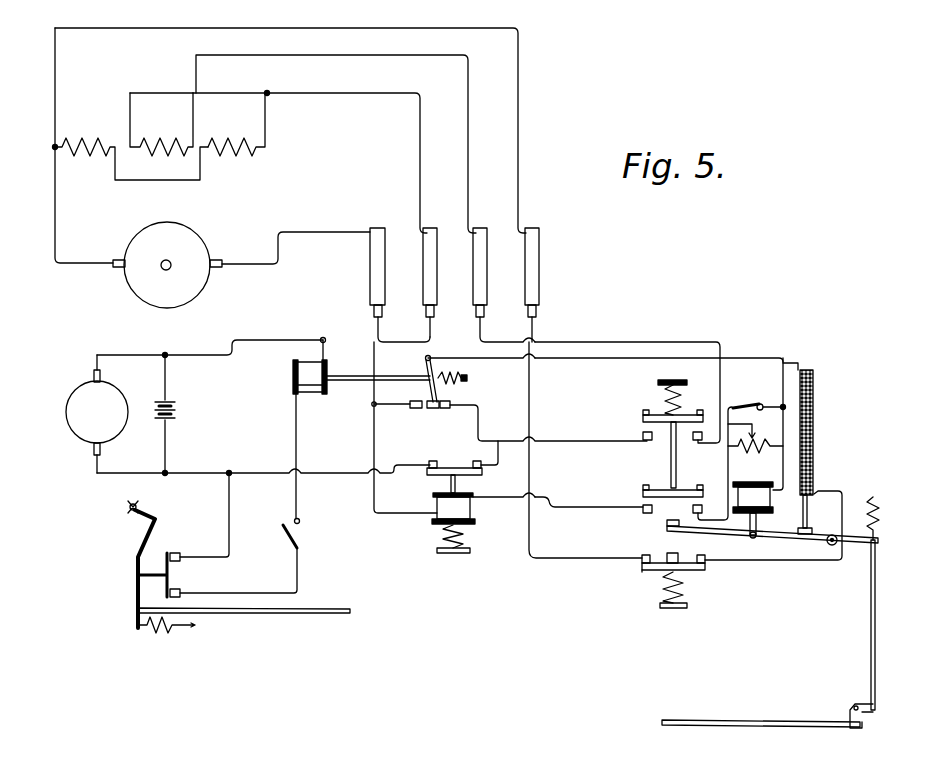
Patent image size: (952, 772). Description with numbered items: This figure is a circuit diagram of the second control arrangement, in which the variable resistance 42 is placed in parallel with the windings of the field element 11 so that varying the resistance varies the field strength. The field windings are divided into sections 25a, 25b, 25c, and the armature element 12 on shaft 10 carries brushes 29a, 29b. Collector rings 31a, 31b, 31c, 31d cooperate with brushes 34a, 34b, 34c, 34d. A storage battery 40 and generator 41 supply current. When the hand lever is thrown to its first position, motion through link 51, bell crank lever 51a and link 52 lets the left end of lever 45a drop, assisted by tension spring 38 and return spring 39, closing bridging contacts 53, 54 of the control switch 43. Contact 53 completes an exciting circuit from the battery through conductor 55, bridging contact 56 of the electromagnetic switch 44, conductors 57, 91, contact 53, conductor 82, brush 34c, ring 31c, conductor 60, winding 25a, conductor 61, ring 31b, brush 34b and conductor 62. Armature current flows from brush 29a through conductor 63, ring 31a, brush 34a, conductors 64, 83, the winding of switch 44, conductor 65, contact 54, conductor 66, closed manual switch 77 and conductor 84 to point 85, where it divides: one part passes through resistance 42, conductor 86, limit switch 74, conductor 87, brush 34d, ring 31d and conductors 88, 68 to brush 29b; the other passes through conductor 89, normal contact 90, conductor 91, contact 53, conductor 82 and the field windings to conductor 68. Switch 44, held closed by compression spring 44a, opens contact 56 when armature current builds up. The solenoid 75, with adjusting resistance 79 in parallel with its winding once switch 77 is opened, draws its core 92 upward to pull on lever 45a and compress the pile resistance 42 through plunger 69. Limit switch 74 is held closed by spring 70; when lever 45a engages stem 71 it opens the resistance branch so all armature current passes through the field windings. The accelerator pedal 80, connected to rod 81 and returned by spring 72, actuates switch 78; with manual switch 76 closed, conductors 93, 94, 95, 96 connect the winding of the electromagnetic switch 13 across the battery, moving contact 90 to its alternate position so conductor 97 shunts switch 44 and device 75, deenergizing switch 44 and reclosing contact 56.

The shaft 10 is at (170, 262).
The field element 11 is at (158, 78).
The armature element 12 is at (189, 229).
The relay coil 13 is at (307, 373).
The field winding section 25a is at (161, 124).
The field winding section 25b is at (131, 148).
The field winding section 25c is at (239, 124).
The right hand armature brush 29a is at (219, 270).
The left hand armature brush 29b is at (114, 268).
The collector ring 31a is at (375, 221).
The collector ring 31b is at (433, 221).
The collector ring 31c is at (484, 221).
The collector ring 31d is at (536, 221).
The brush 34a is at (370, 338).
The brush 34b is at (413, 321).
The brush 34c is at (476, 338).
The brush 34d is at (528, 328).
The coiled tension spring 38 is at (878, 515).
The return spring 39 is at (684, 393).
The storage battery 40 is at (177, 413).
The generator 41 is at (66, 420).
The variable resistance 42 is at (814, 425).
The operator's control switch 43 is at (649, 406).
The electromagnetic switch 44 is at (433, 505).
The compression spring 44a is at (442, 534).
The control lever 45a is at (705, 540).
The link 51 is at (690, 720).
The bell crank lever 51a is at (852, 700).
The link 52 is at (878, 594).
The bridging contact 53 is at (690, 415).
The bridging contact 54 is at (681, 489).
The conductor 55 is at (186, 473).
The bridging contact 56 is at (445, 467).
The conductor 57 is at (502, 463).
The conductor 60 is at (470, 152).
The conductor 61 is at (422, 160).
The conductor 62 is at (222, 352).
The conductor 63 is at (281, 250).
The conductor 64 is at (372, 375).
The conductor 65 is at (573, 507).
The conductor 66 is at (727, 461).
The conductor 68 is at (62, 204).
The plunger 69 is at (808, 512).
The compression spring 70 is at (690, 590).
The stem 71 is at (667, 553).
The return spring 72 is at (167, 643).
The limit switch 74 is at (648, 574).
The electromagnetic actuator 75 is at (770, 502).
The manual switch 76 is at (300, 536).
The manual switch 77 is at (756, 396).
The pedal actuated switch 78 is at (176, 576).
The adjusting resistance 79 is at (755, 452).
The accelerator pedal 80 is at (153, 523).
The rod 81 is at (236, 616).
The conductor 82 is at (600, 344).
The conductor 83 is at (375, 440).
The conductor 84 is at (783, 393).
The point 85 is at (795, 365).
The conductor 86 is at (763, 562).
The conductor 87 is at (532, 551).
The conductor 88 is at (519, 94).
The conductor 89 is at (561, 360).
The normal switch contact 90 is at (425, 359).
The conductor 91 is at (480, 413).
The core 92 is at (758, 527).
The conductor 93 is at (230, 545).
The conductor 94 is at (298, 574).
The conductor 95 is at (298, 439).
The conductor 96 is at (322, 353).
The conductor 97 is at (404, 408).